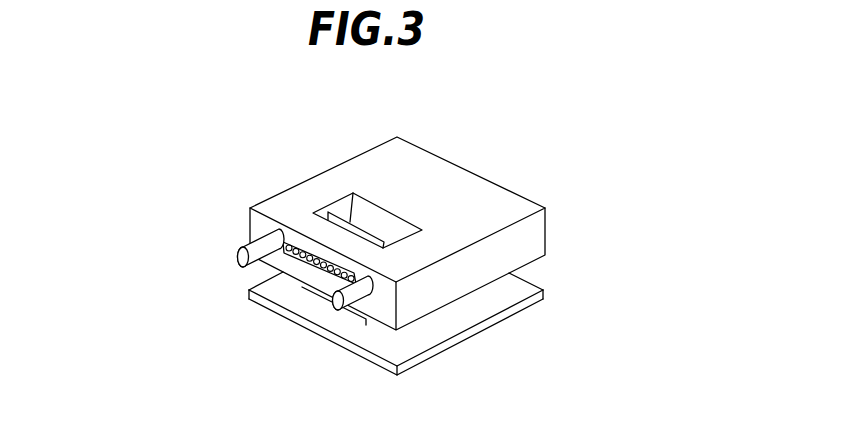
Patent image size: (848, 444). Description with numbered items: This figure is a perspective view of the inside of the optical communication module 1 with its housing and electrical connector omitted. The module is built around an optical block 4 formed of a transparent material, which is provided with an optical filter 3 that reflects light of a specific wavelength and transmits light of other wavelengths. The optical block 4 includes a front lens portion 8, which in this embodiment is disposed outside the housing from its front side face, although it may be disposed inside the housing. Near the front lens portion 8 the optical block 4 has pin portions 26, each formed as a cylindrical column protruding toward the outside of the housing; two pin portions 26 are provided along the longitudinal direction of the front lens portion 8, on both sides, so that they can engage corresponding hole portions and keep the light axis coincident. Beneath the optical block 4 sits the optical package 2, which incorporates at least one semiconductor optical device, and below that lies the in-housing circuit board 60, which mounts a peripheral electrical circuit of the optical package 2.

The optical communication module 1 is at (460, 126).
The optical package 2 is at (312, 293).
The optical filter 3 is at (343, 214).
The optical block 4 is at (373, 157).
The front lens portion 8 is at (283, 244).
The pin portion 26 is at (240, 250).
The in-housing circuit board 60 is at (377, 357).